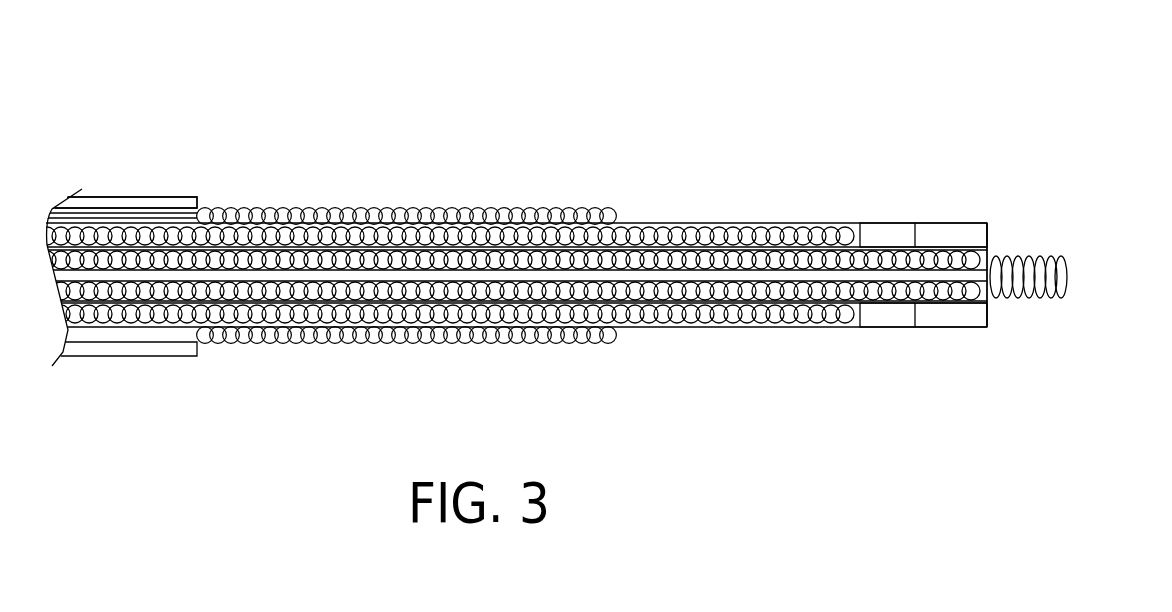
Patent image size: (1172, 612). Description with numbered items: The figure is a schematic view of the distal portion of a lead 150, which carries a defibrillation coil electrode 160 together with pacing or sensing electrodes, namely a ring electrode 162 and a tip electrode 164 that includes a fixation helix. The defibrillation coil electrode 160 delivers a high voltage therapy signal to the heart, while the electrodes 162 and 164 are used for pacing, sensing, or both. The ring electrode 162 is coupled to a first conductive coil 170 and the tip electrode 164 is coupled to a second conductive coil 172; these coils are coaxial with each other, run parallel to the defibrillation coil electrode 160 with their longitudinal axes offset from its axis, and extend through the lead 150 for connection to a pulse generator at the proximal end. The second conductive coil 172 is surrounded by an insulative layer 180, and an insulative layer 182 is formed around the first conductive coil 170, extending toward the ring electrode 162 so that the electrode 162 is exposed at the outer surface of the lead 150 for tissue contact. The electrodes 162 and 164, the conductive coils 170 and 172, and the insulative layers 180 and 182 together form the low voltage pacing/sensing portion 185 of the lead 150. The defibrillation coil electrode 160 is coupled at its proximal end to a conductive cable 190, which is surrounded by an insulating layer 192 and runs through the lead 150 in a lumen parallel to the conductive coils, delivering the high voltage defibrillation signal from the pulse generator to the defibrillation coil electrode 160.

The lead 150 is at (908, 108).
The defibrillation coil electrode 160 is at (468, 212).
The ring electrode 162 is at (890, 233).
The tip electrode 164 is at (1062, 285).
The first conductive coil 170 is at (734, 240).
The second conductive coil 172 is at (800, 263).
The insulative layer 180 is at (817, 328).
The insulative layer 182 is at (665, 230).
The low voltage pacing/sensing portion 185 is at (1008, 236).
The conductive cable 190 is at (118, 199).
The insulating layer 192 is at (175, 205).